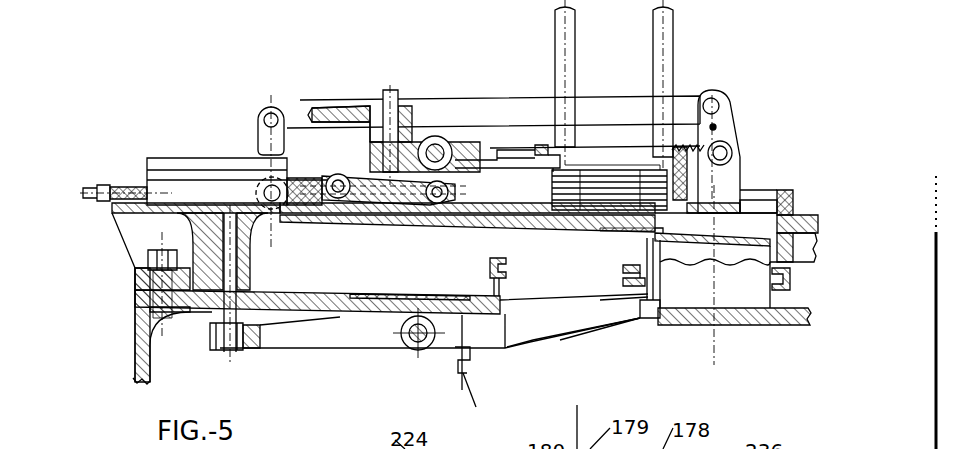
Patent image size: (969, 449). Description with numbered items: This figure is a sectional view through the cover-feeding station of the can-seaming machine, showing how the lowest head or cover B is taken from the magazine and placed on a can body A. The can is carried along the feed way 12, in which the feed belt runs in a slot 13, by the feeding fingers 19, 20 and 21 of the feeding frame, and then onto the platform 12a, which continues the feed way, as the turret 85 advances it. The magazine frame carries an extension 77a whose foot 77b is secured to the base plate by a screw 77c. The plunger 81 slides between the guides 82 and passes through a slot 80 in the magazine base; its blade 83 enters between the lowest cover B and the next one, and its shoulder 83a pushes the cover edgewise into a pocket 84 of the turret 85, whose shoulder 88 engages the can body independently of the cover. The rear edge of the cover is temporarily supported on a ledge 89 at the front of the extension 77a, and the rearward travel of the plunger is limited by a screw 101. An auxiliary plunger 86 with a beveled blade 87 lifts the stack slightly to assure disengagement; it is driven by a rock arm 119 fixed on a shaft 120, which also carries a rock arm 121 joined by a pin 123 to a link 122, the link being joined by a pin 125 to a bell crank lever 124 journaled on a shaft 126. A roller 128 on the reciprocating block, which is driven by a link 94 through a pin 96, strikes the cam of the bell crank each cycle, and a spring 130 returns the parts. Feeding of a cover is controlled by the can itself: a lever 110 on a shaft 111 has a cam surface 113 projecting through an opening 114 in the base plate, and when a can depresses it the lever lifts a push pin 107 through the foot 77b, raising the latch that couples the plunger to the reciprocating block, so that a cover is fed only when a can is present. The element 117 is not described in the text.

The feed way 12 is at (338, 292).
The platform 12a is at (732, 318).
The slot 13 is at (385, 307).
The feeding finger 19 is at (503, 280).
The feeding finger 20 is at (652, 302).
The feeding finger 21 is at (782, 292).
The extension of the magazine frame 77a is at (447, 215).
The foot or support 77b is at (190, 267).
The screw 77c is at (140, 297).
The slot 80 is at (540, 168).
The plunger 81 is at (540, 229).
The guides 82 is at (178, 195).
The blade 83 is at (657, 214).
The shoulder 83a is at (657, 222).
The pocket 84 is at (790, 194).
The turret 85 is at (797, 220).
The auxiliary plunger 86 is at (722, 208).
The blade 87 is at (710, 198).
The shoulder 88 is at (812, 226).
The ledge 89 is at (656, 236).
The link 94 is at (366, 104).
The pin 96 is at (398, 92).
The screw 101 is at (135, 185).
The push pin 107 is at (223, 349).
The lever 110 is at (288, 342).
The shaft 111 is at (420, 338).
The cam surface 113 is at (553, 305).
The opening 114 is at (637, 312).
The stop block 117 is at (736, 207).
The rock arm 119 is at (740, 155).
The shaft 120 is at (733, 150).
The rock arm 121 is at (732, 147).
The link 122 is at (430, 108).
The pin 123 is at (726, 120).
The bell crank lever 124 is at (259, 128).
The pin 125 is at (277, 117).
The shaft 126 is at (282, 213).
The roller 128 is at (440, 140).
The spring 130 is at (710, 98).
The can body A is at (757, 293).
The cover B is at (622, 175).